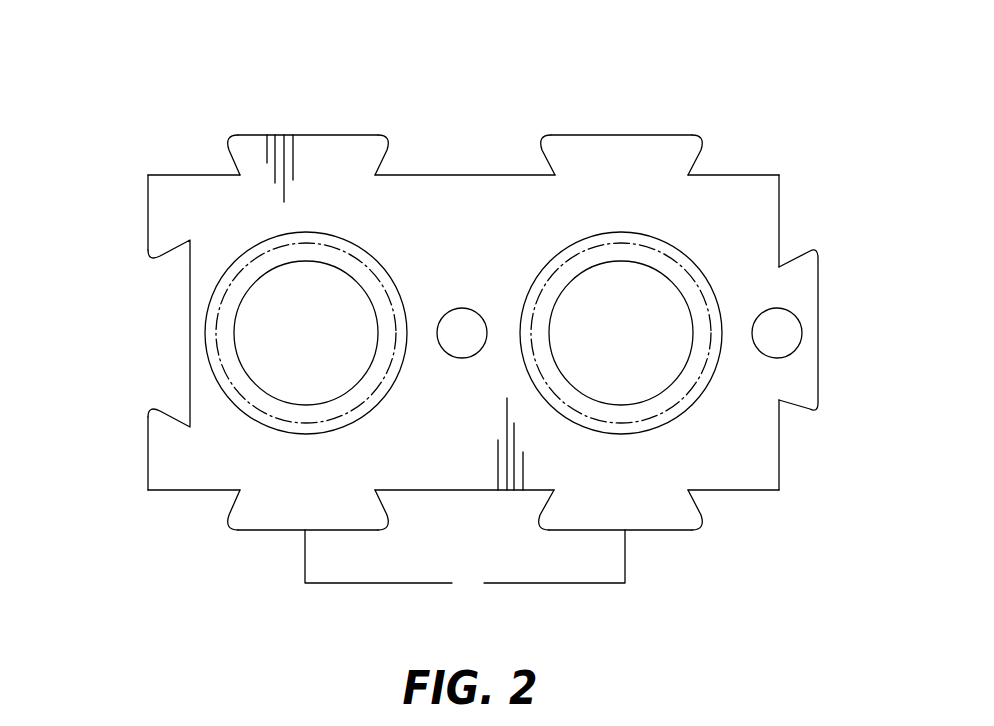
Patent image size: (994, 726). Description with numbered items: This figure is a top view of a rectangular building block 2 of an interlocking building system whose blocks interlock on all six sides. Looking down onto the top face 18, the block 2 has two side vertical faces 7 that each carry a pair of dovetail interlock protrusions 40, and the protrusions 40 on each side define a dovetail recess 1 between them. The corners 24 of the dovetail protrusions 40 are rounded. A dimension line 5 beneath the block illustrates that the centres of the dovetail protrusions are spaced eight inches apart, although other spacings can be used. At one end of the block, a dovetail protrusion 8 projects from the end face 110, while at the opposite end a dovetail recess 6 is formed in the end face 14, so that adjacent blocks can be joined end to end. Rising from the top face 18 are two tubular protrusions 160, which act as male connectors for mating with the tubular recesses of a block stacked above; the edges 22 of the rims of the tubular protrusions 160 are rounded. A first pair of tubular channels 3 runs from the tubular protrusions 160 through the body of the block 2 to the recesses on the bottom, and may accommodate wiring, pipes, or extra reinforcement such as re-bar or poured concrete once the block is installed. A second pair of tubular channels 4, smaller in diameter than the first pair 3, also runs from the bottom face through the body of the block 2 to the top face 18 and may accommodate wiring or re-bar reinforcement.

The rectangular block 2 is at (683, 108).
The dovetail recess 1 is at (463, 173).
The side vertical faces 7 is at (168, 175).
The end face 14 is at (148, 208).
The end face 110 is at (780, 207).
The dovetail recess 6 is at (190, 327).
The dovetail protrusion 8 is at (818, 313).
The corners 24 is at (227, 137).
The dovetail interlock protrusions 40 is at (310, 135).
The dimension line 5 is at (465, 564).
The tubular protrusions 160 is at (365, 250).
The edges 22 is at (387, 282).
The first pair of tubular channels 3 is at (463, 333).
The second pair of tubular channels 4 is at (619, 333).
The top face 18 is at (520, 222).